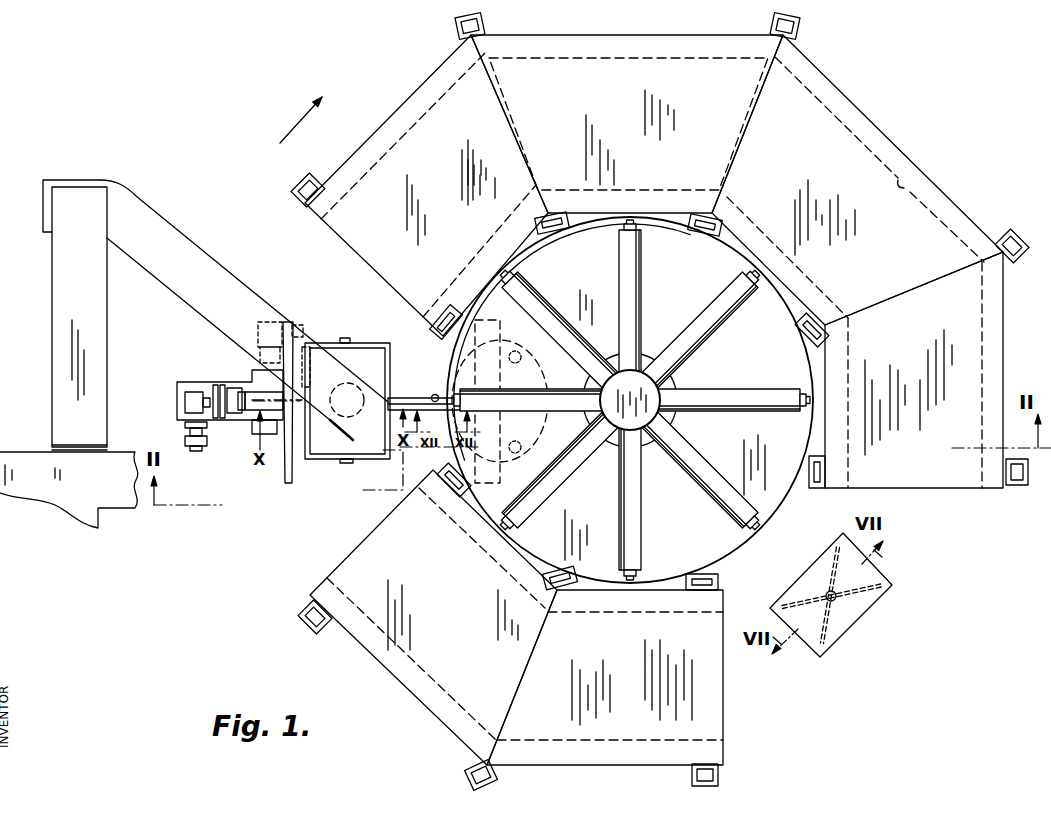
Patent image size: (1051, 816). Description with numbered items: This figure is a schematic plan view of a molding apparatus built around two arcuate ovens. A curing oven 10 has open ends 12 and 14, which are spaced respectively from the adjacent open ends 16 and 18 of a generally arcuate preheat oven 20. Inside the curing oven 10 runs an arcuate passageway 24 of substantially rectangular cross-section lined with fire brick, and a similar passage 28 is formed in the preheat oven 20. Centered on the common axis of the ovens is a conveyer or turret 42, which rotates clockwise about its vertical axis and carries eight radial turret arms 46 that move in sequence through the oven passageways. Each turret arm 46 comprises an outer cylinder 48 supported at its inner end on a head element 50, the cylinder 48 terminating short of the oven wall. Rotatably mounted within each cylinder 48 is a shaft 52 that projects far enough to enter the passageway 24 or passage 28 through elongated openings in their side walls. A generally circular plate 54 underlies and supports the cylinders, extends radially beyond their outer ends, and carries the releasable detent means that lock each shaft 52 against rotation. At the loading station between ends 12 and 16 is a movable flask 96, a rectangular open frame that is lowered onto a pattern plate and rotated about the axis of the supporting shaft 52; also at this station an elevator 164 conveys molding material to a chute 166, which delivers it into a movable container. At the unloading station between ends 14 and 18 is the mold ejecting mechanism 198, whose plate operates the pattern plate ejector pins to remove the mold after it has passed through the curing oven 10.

The curing oven 10 is at (870, 141).
The open end 12 is at (342, 245).
The open end 14 is at (973, 493).
The open end 16 is at (353, 553).
The open end 18 is at (723, 707).
The preheat oven 20 is at (387, 656).
The arcuate passageway 24 is at (906, 187).
The passage 28 is at (723, 733).
The conveyer or turret 42 is at (648, 353).
The turret arms 46 is at (619, 288).
The outer cylinder 48 is at (620, 252).
The head element 50 is at (651, 394).
The shaft 52 is at (432, 396).
The circular plate 54 is at (666, 237).
The flask 96 is at (364, 346).
The elevator 164 is at (15, 456).
The chute 166 is at (197, 258).
The mold ejecting mechanism 198 is at (850, 642).